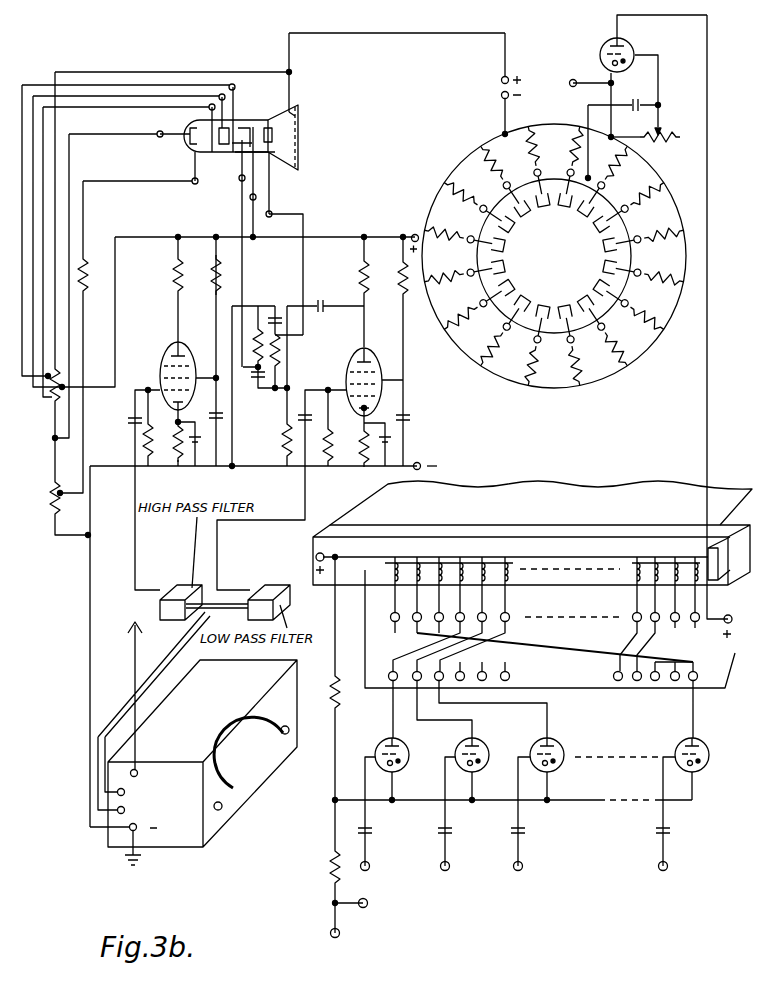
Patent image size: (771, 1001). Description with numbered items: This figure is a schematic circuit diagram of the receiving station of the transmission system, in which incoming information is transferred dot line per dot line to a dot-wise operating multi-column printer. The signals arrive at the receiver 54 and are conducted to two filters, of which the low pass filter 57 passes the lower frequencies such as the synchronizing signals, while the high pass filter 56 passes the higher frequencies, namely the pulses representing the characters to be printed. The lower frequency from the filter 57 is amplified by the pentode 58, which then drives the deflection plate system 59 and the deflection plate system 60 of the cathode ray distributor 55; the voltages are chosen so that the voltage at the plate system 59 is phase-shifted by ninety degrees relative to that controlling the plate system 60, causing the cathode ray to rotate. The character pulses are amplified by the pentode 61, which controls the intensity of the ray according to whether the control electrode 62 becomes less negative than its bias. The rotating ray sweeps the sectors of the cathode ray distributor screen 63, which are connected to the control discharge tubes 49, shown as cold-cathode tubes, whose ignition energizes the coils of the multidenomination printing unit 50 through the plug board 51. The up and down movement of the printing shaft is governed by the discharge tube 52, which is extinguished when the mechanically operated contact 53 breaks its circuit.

The multidenomination tubes 49 is at (668, 750).
The multidenomination printing unit 50 is at (718, 528).
The plug board 51 is at (378, 636).
The discharge tube 52 is at (610, 38).
The contact 53 is at (710, 252).
The receiver 54 is at (264, 765).
The cathode ray distributor 55 is at (290, 127).
The high pass filter 56 is at (180, 596).
The low pass filter 57 is at (266, 596).
The pentode 58 is at (357, 352).
The deflection plate system 59 is at (240, 145).
The deflection plate system 60 is at (267, 128).
The pentode 61 is at (170, 347).
The control electrode 62 is at (190, 148).
The cathode ray distributor screen 63 is at (575, 323).